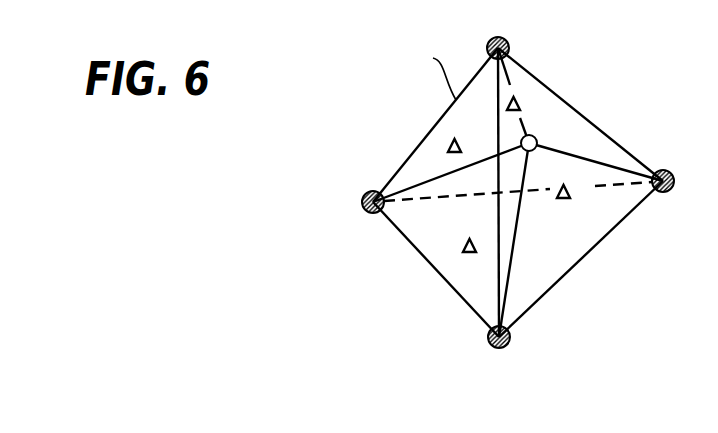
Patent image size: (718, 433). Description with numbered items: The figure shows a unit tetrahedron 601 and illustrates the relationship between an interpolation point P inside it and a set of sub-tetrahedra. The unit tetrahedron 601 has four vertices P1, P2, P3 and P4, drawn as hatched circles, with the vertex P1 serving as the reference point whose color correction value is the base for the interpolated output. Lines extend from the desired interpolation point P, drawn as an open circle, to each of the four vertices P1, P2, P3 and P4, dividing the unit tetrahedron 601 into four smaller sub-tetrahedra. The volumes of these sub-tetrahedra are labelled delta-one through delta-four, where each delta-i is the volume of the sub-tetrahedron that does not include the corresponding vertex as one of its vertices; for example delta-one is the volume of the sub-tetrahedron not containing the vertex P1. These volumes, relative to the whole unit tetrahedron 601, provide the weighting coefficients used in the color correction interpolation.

The unit tetrahedron 601 is at (491, 193).
The vertex P1 is at (501, 34).
The vertex P2 is at (357, 204).
The vertex P3 is at (500, 352).
The vertex P4 is at (679, 182).
The interpolation point P is at (537, 137).